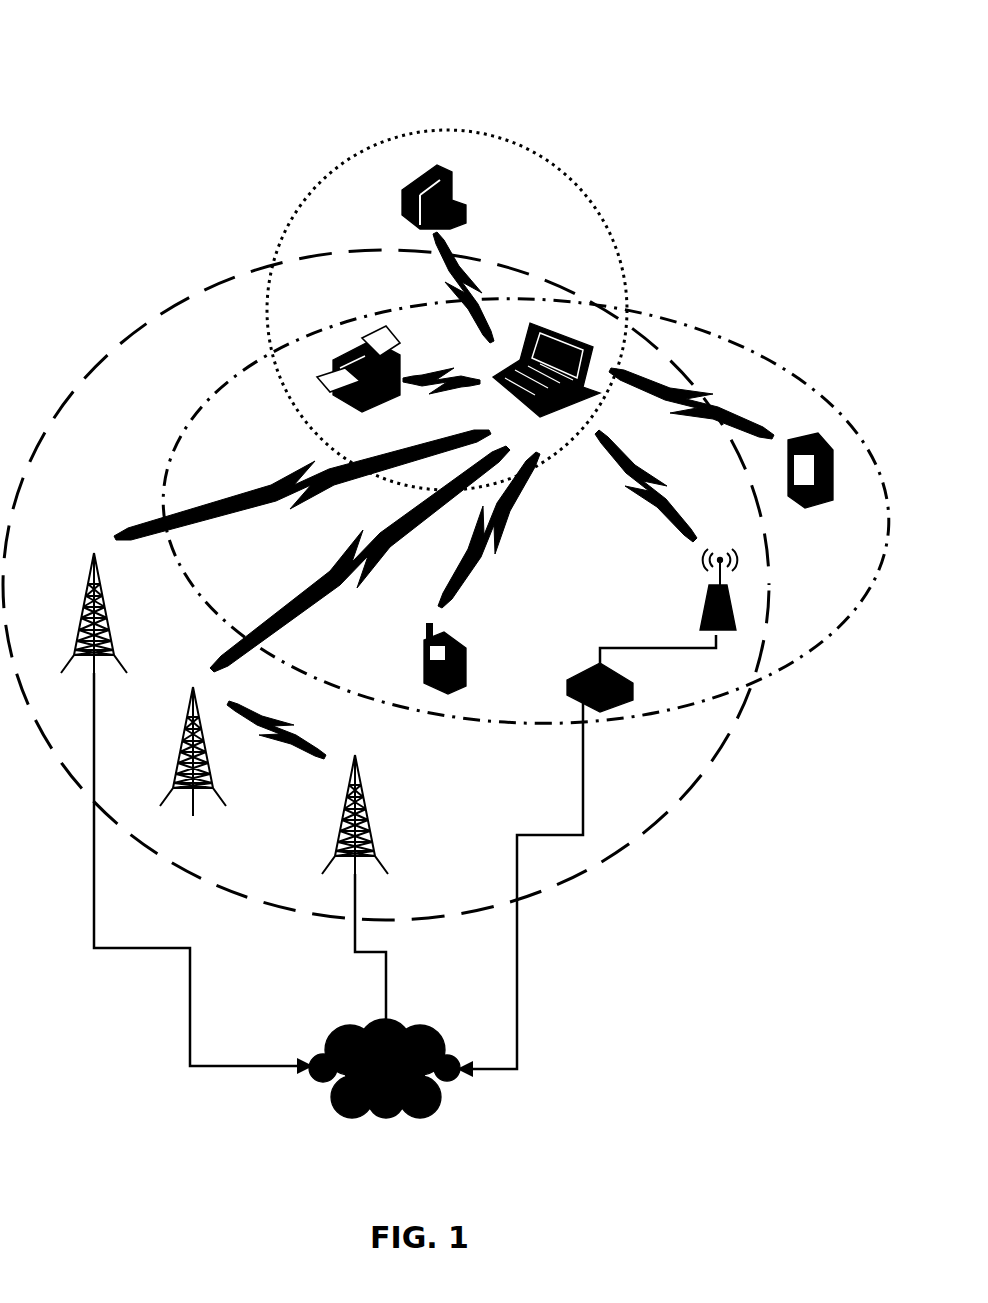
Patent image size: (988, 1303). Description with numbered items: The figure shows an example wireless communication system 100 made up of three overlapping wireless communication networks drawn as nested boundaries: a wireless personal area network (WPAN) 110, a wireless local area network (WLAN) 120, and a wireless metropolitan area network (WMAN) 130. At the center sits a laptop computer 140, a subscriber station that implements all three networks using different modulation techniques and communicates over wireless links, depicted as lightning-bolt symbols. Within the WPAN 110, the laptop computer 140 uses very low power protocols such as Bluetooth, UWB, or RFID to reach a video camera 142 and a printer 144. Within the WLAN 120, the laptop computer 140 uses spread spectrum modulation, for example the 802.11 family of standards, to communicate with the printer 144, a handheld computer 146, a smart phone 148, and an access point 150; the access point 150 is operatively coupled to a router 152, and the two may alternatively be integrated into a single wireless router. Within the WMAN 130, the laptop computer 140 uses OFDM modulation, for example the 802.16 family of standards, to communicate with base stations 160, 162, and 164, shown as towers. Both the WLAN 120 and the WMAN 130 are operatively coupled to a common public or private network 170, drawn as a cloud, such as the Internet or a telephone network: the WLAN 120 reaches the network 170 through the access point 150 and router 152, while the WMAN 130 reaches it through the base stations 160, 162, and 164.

The wireless communication system 100 is at (110, 50).
The wireless personal area network 110 is at (448, 128).
The wireless local area network 120 is at (152, 471).
The wireless metropolitan area network 130 is at (200, 286).
The laptop computer 140 is at (548, 318).
The video camera 142 is at (450, 196).
The printer 144 is at (368, 412).
The handheld computer 146 is at (803, 440).
The smart phone 148 is at (448, 641).
The access point 150 is at (710, 607).
The router 152 is at (585, 668).
The base station 160 is at (86, 590).
The base station 162 is at (188, 740).
The base station 164 is at (347, 805).
The common public or private network 170 is at (335, 1035).